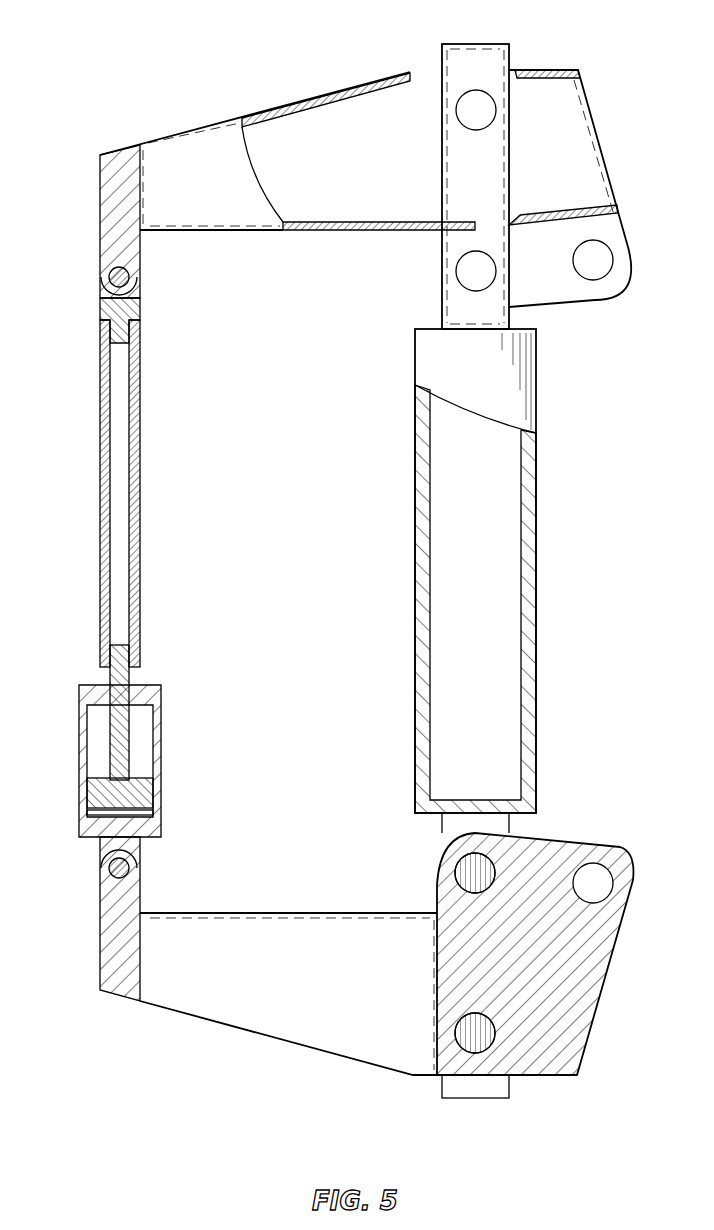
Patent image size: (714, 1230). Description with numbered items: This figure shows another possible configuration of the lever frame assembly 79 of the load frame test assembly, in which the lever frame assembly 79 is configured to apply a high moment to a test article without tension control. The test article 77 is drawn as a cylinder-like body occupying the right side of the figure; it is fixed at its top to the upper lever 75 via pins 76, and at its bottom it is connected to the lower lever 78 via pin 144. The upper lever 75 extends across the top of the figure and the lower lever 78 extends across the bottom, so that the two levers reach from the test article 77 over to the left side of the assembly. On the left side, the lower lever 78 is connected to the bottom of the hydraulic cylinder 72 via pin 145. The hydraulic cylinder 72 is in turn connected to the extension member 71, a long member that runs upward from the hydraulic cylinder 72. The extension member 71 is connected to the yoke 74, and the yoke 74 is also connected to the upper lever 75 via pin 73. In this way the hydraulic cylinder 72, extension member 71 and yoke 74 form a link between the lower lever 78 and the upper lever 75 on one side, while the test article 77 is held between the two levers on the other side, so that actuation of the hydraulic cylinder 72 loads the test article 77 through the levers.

The lever frame assembly 79 is at (110, 52).
The upper lever 75 is at (214, 202).
The pin 73 is at (123, 280).
The yoke 74 is at (112, 312).
The extension member 71 is at (102, 425).
The hydraulic cylinder 72 is at (82, 742).
The pin 145 is at (130, 863).
The lower lever 78 is at (286, 987).
The pins 76 is at (475, 113).
The test article 77 is at (530, 615).
The pin 144 is at (475, 873).